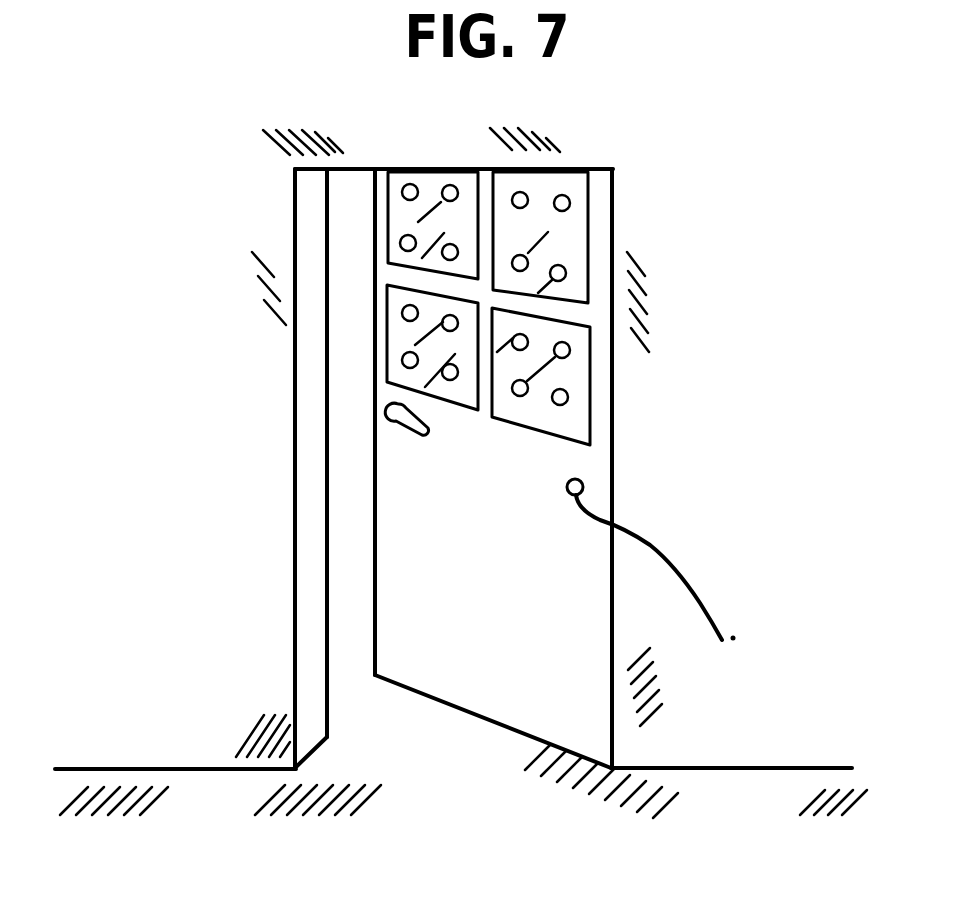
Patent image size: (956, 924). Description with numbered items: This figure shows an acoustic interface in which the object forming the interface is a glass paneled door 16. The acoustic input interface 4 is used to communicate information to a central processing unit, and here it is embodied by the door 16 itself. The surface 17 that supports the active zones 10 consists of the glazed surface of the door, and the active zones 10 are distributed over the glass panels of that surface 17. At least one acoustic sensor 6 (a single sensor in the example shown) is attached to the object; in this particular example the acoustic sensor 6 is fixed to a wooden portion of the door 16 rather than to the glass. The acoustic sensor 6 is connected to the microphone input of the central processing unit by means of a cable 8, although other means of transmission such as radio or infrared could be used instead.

The acoustic input interface 4 is at (322, 646).
The acoustic sensor 6 is at (582, 481).
The cable 8 is at (650, 545).
The active zones 10 is at (566, 392).
The glass paneled door 16 is at (494, 744).
The surface 17 is at (367, 349).